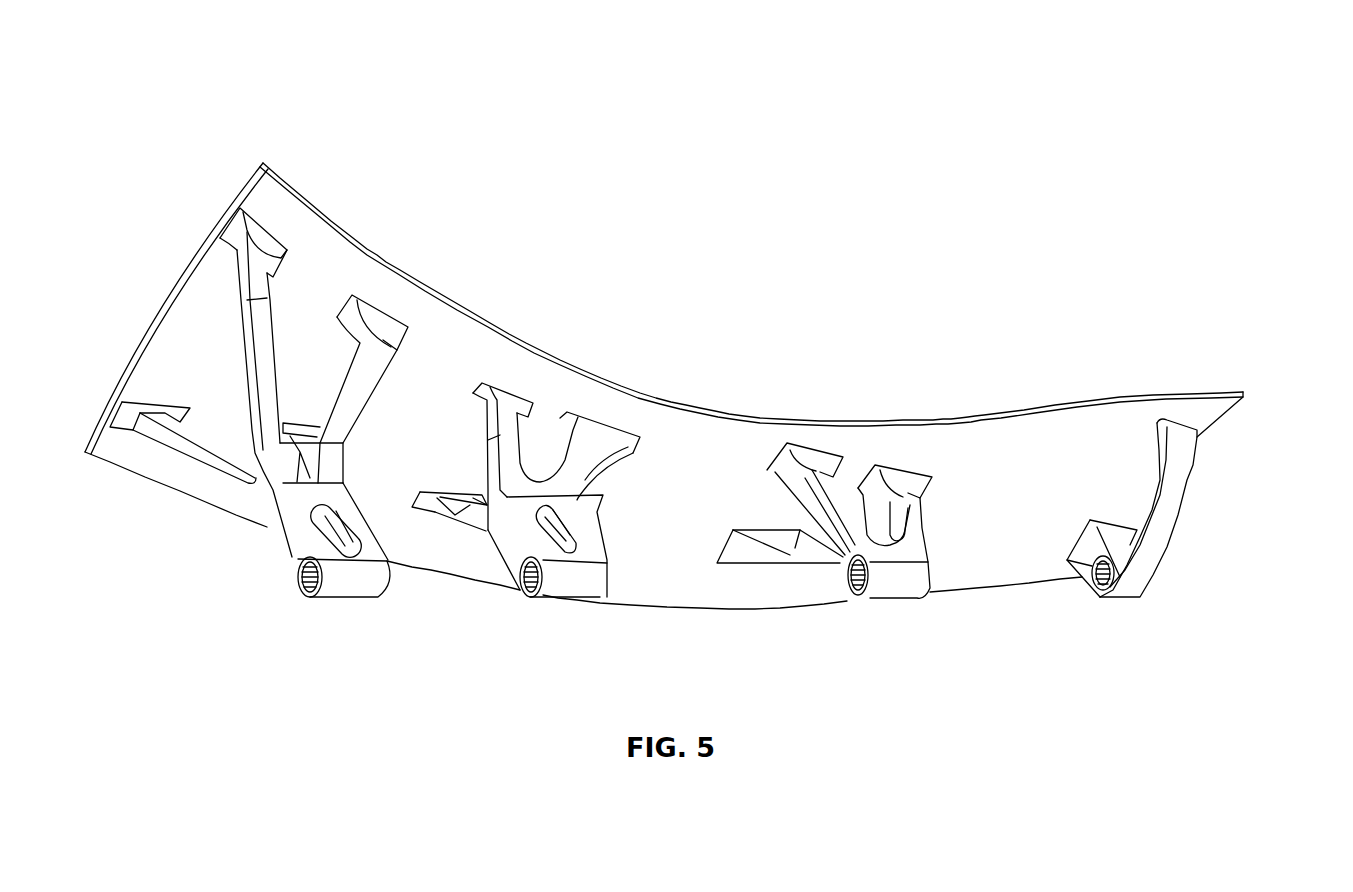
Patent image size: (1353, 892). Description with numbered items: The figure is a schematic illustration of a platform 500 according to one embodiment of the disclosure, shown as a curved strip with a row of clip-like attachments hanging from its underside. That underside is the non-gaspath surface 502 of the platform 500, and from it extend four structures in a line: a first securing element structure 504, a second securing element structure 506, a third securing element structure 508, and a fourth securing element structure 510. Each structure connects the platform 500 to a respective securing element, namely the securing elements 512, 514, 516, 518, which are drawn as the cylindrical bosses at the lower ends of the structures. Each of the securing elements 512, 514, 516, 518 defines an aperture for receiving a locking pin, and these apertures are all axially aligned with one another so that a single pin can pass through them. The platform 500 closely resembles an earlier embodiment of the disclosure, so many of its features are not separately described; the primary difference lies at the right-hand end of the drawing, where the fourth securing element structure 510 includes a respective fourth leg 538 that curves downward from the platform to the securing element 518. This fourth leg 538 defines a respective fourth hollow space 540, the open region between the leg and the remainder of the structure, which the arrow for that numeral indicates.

The platform 500 is at (1229, 148).
The non-gaspath surface 502 is at (689, 582).
The first securing element structure 504 is at (405, 368).
The second securing element structure 506 is at (652, 440).
The third securing element structure 508 is at (948, 456).
The fourth securing element structure 510 is at (1180, 577).
The securing element 512 is at (347, 583).
The securing element 514 is at (573, 583).
The securing element 516 is at (867, 597).
The securing element 518 is at (1130, 588).
The fourth leg 538 is at (1173, 510).
The fourth hollow space 540 is at (1140, 471).